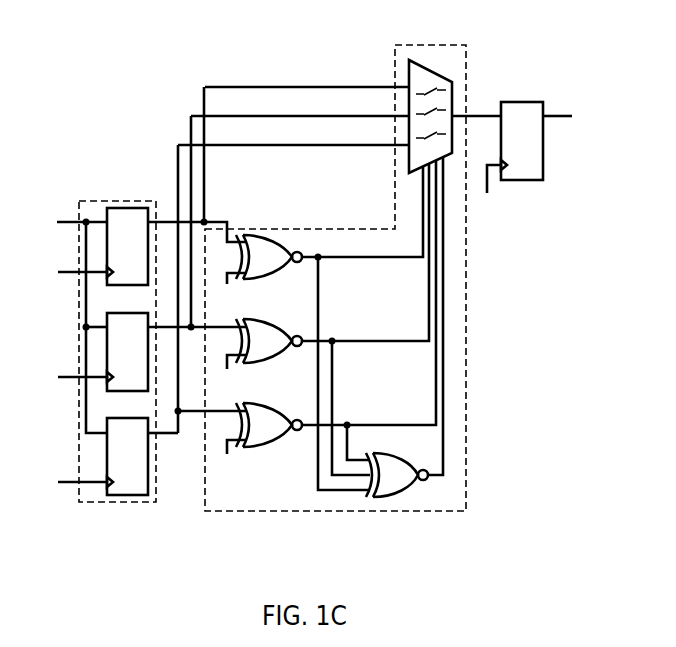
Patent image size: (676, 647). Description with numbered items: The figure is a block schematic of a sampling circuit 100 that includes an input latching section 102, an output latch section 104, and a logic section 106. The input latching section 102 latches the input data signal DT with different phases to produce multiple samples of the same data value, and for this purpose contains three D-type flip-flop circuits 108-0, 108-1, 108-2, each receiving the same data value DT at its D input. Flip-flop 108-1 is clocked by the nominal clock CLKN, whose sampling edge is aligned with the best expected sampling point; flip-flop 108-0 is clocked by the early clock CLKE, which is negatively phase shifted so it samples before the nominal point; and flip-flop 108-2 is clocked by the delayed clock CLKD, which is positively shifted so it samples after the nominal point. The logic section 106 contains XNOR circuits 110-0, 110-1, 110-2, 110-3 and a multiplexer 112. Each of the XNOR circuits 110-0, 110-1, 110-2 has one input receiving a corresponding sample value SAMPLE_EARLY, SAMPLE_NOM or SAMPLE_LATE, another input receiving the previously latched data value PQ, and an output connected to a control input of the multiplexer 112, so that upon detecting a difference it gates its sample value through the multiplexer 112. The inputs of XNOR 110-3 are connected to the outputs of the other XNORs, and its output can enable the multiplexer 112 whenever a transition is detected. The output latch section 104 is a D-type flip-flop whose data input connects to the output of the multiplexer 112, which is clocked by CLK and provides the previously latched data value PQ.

The sampling circuit 100 is at (575, 37).
The input latching section 102 is at (126, 201).
The output latch section 104 is at (524, 162).
The logic section 106 is at (466, 314).
The D-type flip-flop circuit 108-0 is at (130, 246).
The D-type flip-flop circuit 108-1 is at (130, 352).
The D-type flip-flop circuit 108-2 is at (130, 456).
The XNOR circuit 110-0 is at (268, 268).
The XNOR circuit 110-1 is at (268, 352).
The XNOR circuit 110-2 is at (268, 436).
The XNOR circuit 110-3 is at (396, 480).
The multiplexer 112 is at (428, 70).